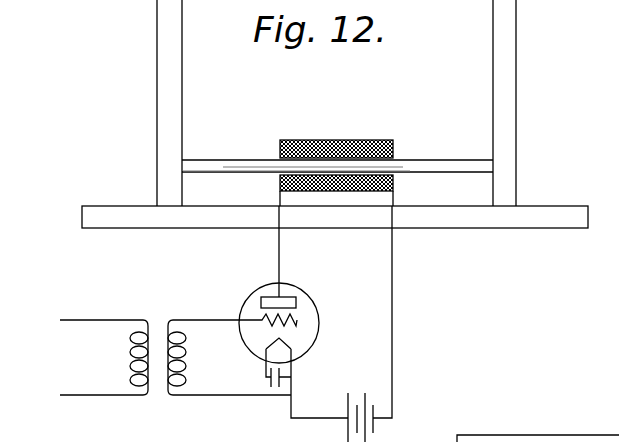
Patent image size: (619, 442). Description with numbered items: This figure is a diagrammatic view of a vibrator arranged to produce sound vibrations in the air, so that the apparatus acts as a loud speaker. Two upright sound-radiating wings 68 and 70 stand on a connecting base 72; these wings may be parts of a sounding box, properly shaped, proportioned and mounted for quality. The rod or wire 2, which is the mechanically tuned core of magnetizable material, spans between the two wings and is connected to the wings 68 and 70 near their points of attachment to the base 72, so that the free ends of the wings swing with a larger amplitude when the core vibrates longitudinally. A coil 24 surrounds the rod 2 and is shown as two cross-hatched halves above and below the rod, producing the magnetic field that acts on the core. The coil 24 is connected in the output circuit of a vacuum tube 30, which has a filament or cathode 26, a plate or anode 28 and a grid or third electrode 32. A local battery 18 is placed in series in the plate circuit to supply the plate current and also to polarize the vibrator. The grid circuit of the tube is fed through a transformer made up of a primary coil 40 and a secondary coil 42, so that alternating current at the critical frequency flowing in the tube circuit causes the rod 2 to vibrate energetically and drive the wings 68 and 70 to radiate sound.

The sound-radiating wing 68 is at (163, 36).
The sound-radiating wing 70 is at (507, 49).
The connecting base 72 is at (442, 228).
The rod or wire 2 is at (232, 164).
The coil 24 is at (327, 140).
The vacuum tube 30 is at (315, 307).
The plate or anode 28 is at (264, 297).
The grid or third electrode 32 is at (297, 320).
The filament or cathode 26 is at (291, 347).
The local battery 18 is at (373, 428).
The secondary coil 42 is at (143, 315).
The primary coil 40 is at (166, 326).